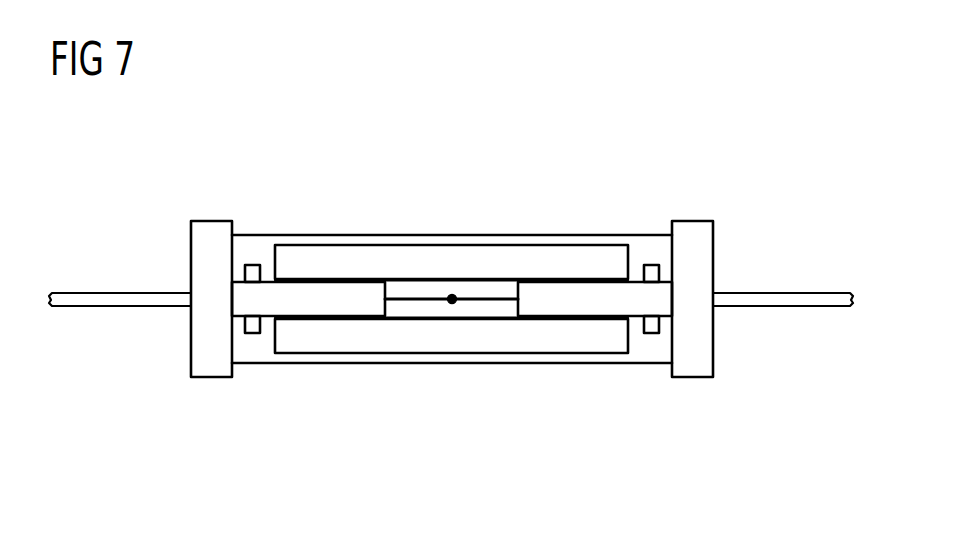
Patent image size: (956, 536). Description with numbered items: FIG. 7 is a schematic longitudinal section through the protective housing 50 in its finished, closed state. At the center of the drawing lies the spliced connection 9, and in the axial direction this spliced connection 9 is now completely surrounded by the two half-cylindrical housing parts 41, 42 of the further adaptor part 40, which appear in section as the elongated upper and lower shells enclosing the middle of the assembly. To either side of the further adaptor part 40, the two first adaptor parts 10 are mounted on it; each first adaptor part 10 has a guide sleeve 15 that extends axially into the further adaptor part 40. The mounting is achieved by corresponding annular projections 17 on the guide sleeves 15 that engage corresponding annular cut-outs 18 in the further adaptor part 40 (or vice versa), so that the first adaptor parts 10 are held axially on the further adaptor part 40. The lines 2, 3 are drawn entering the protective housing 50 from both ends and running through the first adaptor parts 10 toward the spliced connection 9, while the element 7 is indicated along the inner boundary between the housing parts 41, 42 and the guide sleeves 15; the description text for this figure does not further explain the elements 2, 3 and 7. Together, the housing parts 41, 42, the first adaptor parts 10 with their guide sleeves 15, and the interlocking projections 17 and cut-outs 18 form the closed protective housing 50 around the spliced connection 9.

The protective housing 50 is at (187, 176).
The conductor 2 is at (128, 300).
The wire 3 is at (451, 299).
The insulation layer 7 is at (423, 285).
The spliced connection 9 is at (452, 303).
The first adaptor part 10 is at (320, 300).
The guide sleeve 15 is at (452, 299).
The annular projection 17 is at (250, 278).
The annular cut-out 18 is at (452, 299).
The further adaptor part 40 is at (503, 257).
The half-cylindrical housing part 41 is at (452, 299).
The half-cylindrical housing part 42 is at (452, 299).